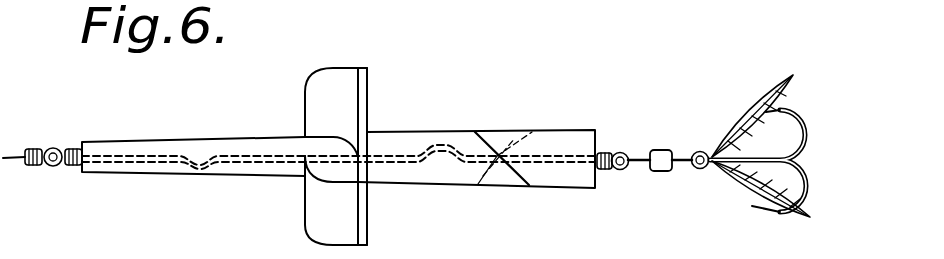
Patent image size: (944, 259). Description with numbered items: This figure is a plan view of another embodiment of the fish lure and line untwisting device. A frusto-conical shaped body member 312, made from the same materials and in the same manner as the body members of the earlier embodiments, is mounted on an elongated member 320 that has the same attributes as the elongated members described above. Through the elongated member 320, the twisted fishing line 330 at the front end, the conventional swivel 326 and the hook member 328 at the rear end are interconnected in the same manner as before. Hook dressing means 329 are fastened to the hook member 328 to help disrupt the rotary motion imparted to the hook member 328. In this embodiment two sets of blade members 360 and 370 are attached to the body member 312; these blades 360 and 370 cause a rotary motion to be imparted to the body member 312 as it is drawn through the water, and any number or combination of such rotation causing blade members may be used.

The body member 312 is at (412, 133).
The elongated member 320 is at (153, 158).
The swivel 326 is at (658, 172).
The hook member 328 is at (757, 207).
The hook dressing means 329 is at (735, 113).
The twisted fishing line 330 is at (11, 158).
The blade members 360 is at (532, 131).
The blade members 370 is at (322, 207).